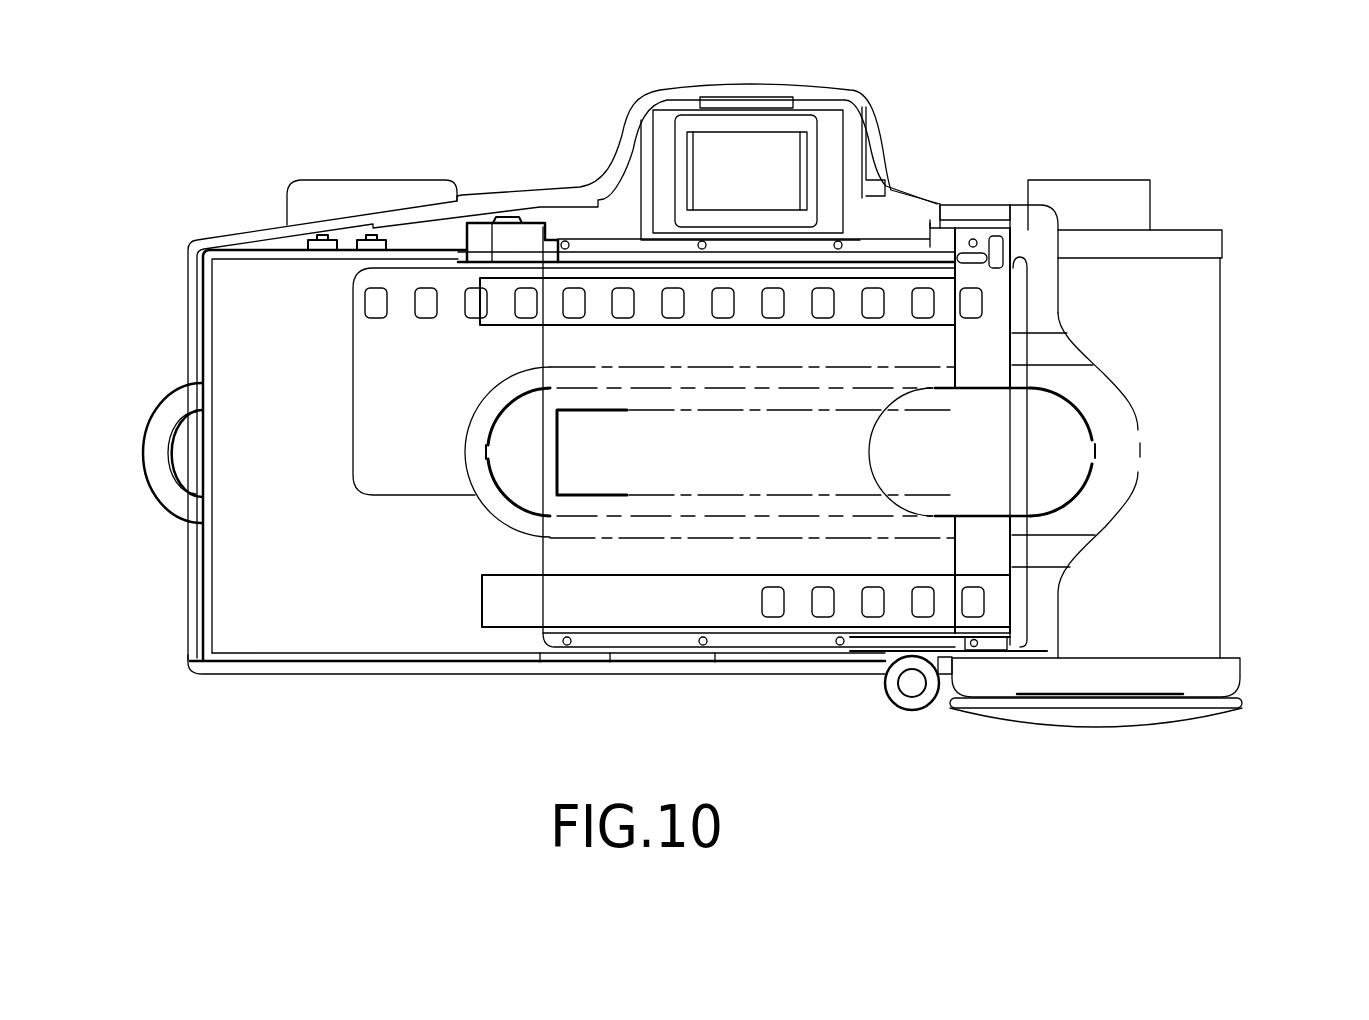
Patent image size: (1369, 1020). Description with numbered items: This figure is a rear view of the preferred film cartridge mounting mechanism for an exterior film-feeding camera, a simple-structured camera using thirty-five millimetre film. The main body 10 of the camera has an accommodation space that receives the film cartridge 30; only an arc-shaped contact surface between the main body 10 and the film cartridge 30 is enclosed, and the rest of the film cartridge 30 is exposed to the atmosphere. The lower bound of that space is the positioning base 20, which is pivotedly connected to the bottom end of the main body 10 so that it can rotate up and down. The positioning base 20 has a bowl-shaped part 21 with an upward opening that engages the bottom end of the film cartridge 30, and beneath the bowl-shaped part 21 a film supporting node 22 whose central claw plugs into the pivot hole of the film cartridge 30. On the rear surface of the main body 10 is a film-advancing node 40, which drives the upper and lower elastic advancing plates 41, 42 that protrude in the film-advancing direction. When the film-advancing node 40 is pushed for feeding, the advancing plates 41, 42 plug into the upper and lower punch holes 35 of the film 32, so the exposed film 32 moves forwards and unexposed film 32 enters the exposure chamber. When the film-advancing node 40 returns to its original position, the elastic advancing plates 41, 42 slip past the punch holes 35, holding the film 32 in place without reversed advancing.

The main body 10 is at (327, 702).
The positioning base 20 is at (1087, 773).
The bowl-shaped part 21 is at (1183, 682).
The film supporting node 22 is at (1097, 722).
The film cartridge 30 is at (1197, 493).
The film 32 is at (423, 300).
The punch holes 35 is at (522, 310).
The film-advancing node 40 is at (1055, 427).
The upper elastic advancing plate 41 is at (970, 300).
The lower elastic advancing plate 42 is at (974, 600).